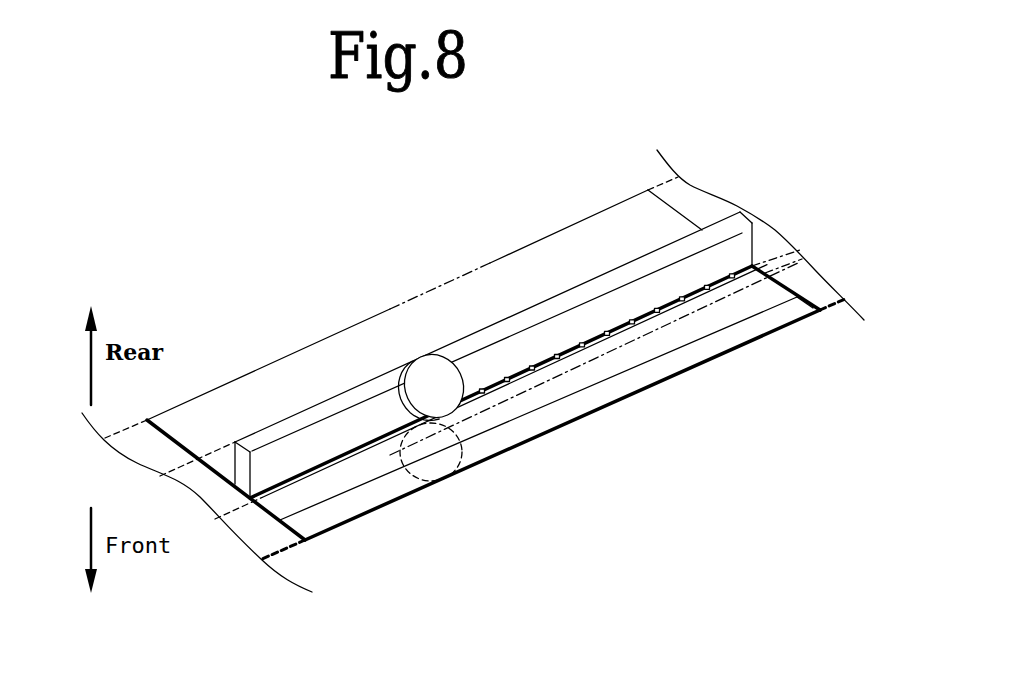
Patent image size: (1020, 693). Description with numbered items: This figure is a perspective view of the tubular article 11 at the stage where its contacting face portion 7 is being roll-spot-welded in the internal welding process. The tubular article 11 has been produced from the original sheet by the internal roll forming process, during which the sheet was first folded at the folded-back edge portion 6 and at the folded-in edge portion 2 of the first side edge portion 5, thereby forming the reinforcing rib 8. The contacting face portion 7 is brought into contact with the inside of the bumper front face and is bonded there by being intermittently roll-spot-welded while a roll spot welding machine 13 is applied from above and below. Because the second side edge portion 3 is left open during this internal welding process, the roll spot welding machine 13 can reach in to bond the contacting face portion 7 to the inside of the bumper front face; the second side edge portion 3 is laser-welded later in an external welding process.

The folded-in edge portion 2 is at (347, 405).
The second side edge portion 3 is at (358, 508).
The first side edge portion 5 is at (293, 457).
The folded-back edge portion 6 is at (553, 355).
The contacting face portion 7 is at (483, 395).
The reinforcing rib 8 is at (612, 322).
The tubular article 11 is at (447, 333).
The roll spot welding machine 13 is at (441, 404).